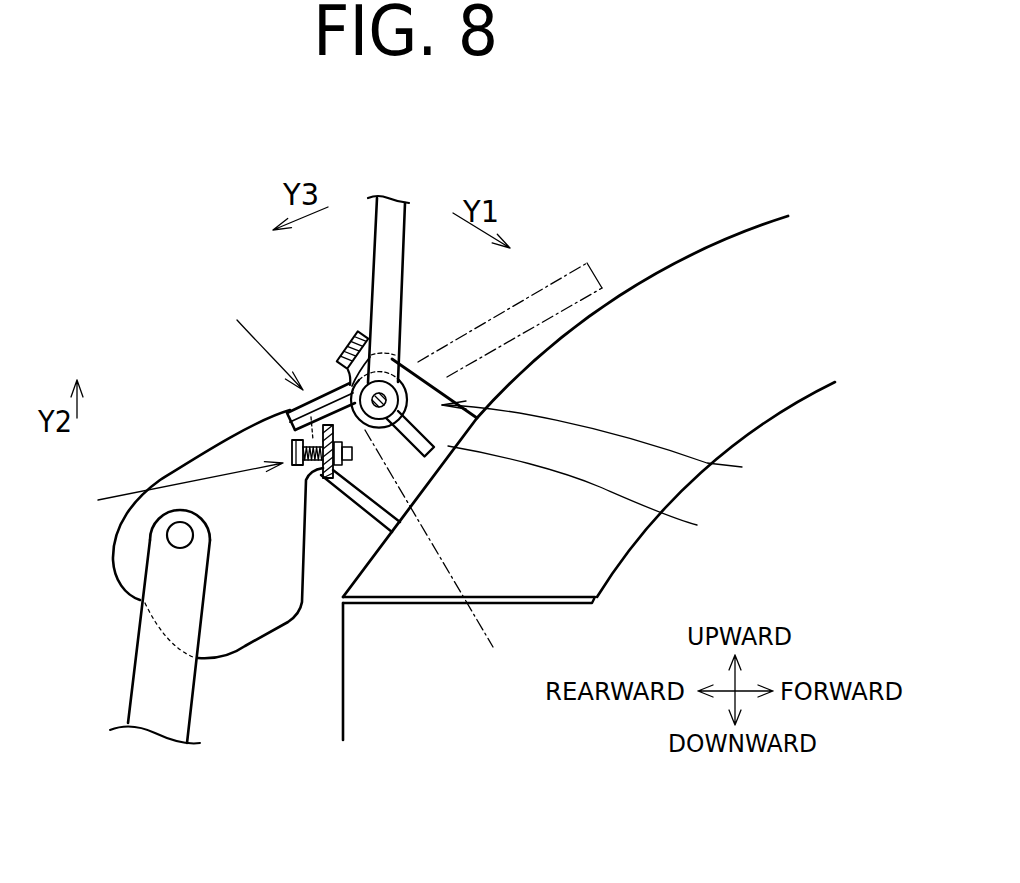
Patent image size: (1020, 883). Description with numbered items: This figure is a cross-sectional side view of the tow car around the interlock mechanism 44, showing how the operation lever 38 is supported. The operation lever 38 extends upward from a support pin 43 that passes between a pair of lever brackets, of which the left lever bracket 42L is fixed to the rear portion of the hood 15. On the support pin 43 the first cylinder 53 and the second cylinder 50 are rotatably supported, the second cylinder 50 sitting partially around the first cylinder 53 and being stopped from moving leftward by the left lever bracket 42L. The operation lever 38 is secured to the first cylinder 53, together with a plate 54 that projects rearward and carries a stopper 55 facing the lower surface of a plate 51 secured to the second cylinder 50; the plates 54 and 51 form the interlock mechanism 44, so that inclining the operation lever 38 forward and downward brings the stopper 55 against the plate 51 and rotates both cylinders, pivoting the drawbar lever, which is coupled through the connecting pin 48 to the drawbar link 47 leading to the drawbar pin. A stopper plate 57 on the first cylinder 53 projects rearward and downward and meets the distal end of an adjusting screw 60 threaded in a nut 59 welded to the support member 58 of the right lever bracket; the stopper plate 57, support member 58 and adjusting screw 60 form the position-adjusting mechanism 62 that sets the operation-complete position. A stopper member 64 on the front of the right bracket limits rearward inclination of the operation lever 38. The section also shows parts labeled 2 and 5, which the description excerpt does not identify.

The vehicle body 2 is at (327, 709).
The bracket 5 is at (352, 637).
The hood 15 is at (687, 277).
The operation lever 38 is at (562, 292).
The left lever bracket 42L is at (742, 467).
The support pin 43 is at (400, 380).
The interlock mechanism 44 is at (261, 337).
The drawbar link 47 is at (147, 680).
The connecting pin 48 is at (180, 535).
The second cylinder 50 is at (345, 382).
The plate 51 is at (283, 411).
The first cylinder 53 is at (410, 402).
The plate 54 is at (290, 427).
The stopper 55 is at (321, 407).
The stopper plate 57 is at (546, 556).
The support member 58 is at (333, 490).
The nut 59 is at (338, 490).
The adjusting screw 60 is at (291, 454).
The position-adjusting mechanism 62 is at (183, 476).
The stopper member 64 is at (342, 345).